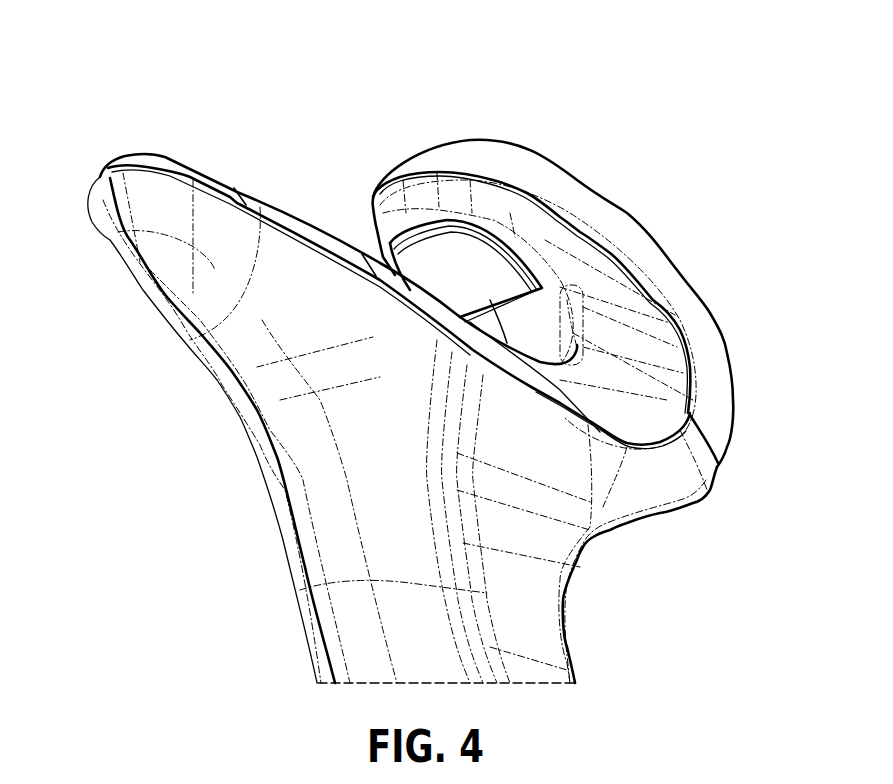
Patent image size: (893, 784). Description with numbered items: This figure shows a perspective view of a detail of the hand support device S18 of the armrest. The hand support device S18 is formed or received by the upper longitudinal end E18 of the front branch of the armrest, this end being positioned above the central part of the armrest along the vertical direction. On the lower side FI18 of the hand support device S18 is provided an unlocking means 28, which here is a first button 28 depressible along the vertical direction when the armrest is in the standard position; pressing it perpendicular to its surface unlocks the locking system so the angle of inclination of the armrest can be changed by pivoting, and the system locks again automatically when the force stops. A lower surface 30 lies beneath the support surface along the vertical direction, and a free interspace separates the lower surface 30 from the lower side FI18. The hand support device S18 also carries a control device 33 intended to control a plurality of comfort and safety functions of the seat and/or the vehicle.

The control device 33 is at (271, 107).
The lower surface 30 is at (150, 160).
The unlocking means 28 is at (433, 272).
The lower side FI18 is at (386, 222).
The hand support device S18 is at (655, 197).
The upper longitudinal end E18 is at (196, 410).